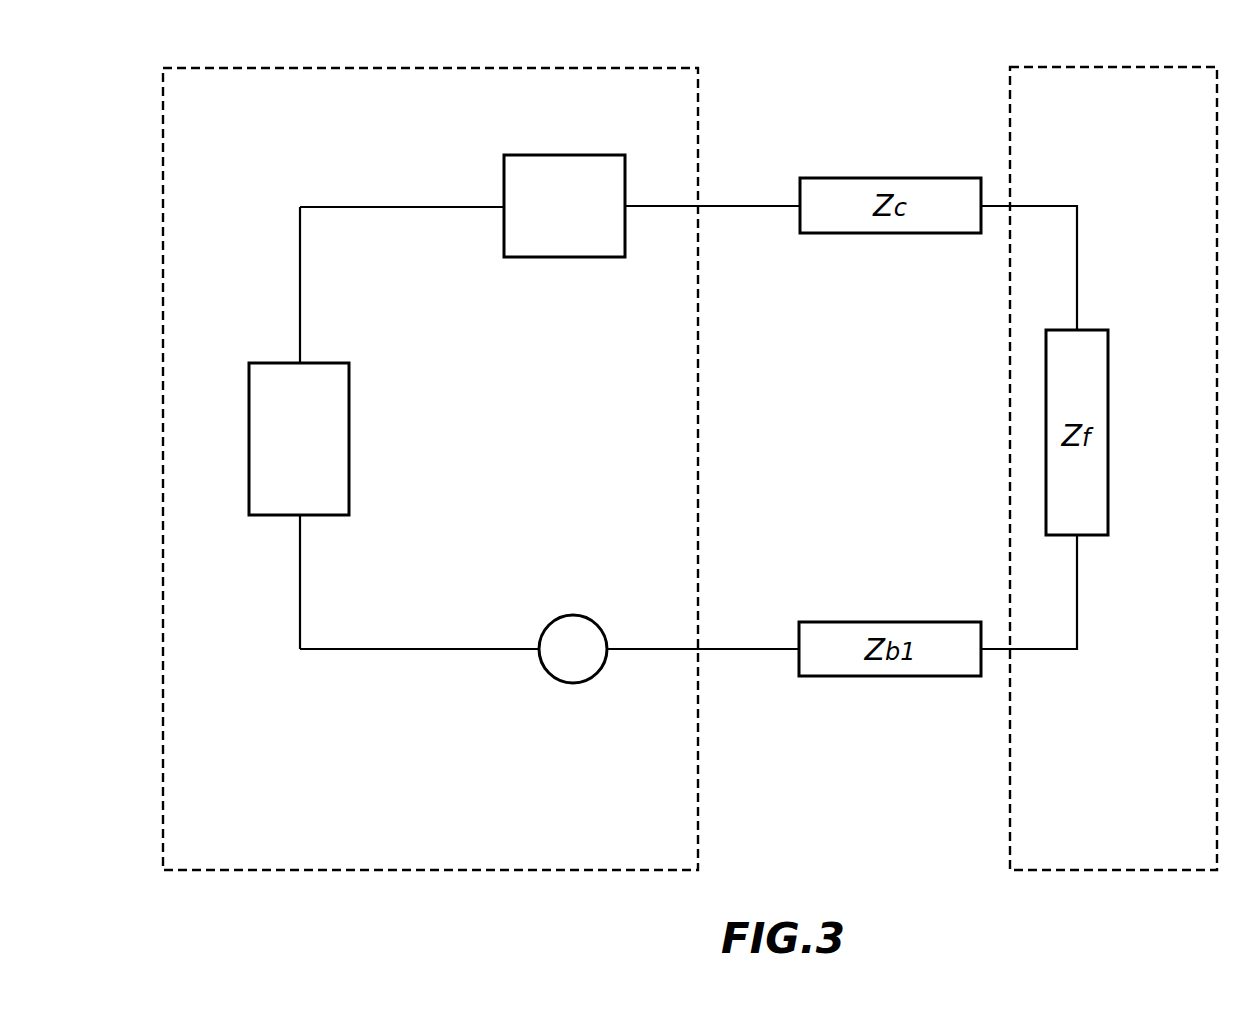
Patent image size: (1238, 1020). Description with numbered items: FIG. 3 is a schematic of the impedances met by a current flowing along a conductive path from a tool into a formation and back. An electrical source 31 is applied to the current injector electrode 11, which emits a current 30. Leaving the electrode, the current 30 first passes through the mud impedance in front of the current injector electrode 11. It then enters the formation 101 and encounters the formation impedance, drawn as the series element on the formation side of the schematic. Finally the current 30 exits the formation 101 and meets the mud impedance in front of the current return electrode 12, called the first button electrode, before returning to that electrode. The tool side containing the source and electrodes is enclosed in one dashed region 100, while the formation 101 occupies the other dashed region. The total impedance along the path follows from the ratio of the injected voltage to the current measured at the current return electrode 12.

The current injector electrode 11 is at (548, 224).
The current return electrode 12 is at (589, 664).
The electrical source 31 is at (279, 457).
The current 30 is at (740, 205).
The first device 100 is at (228, 841).
The formation 101 is at (1136, 849).